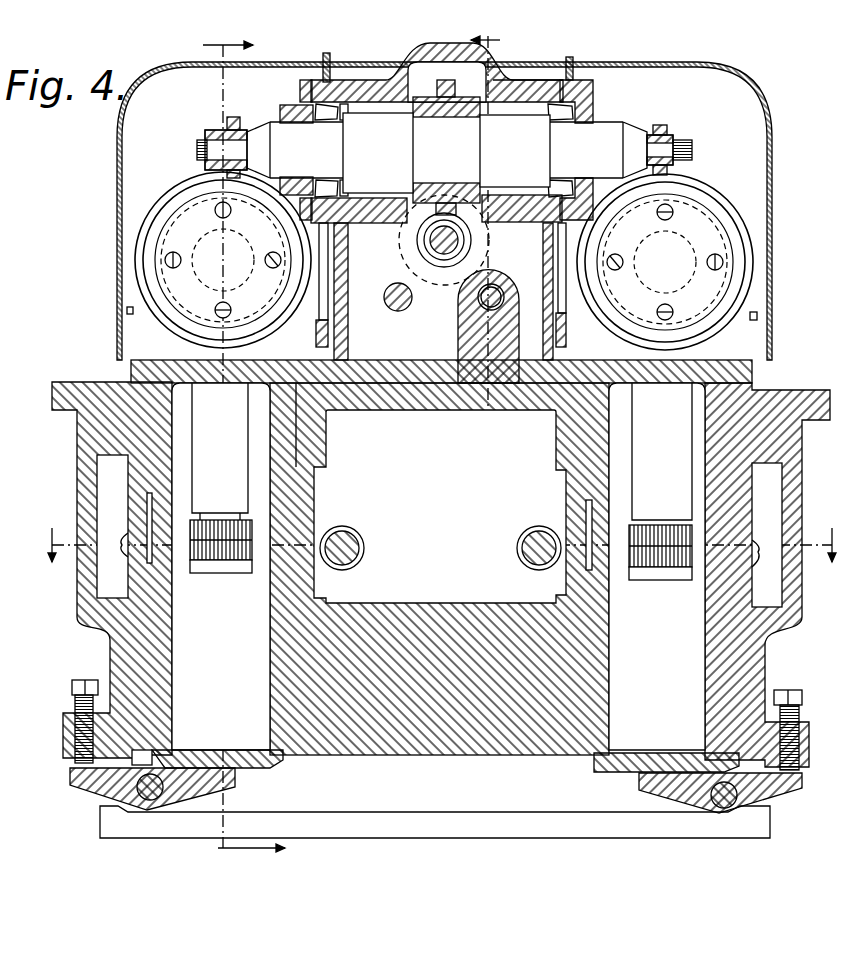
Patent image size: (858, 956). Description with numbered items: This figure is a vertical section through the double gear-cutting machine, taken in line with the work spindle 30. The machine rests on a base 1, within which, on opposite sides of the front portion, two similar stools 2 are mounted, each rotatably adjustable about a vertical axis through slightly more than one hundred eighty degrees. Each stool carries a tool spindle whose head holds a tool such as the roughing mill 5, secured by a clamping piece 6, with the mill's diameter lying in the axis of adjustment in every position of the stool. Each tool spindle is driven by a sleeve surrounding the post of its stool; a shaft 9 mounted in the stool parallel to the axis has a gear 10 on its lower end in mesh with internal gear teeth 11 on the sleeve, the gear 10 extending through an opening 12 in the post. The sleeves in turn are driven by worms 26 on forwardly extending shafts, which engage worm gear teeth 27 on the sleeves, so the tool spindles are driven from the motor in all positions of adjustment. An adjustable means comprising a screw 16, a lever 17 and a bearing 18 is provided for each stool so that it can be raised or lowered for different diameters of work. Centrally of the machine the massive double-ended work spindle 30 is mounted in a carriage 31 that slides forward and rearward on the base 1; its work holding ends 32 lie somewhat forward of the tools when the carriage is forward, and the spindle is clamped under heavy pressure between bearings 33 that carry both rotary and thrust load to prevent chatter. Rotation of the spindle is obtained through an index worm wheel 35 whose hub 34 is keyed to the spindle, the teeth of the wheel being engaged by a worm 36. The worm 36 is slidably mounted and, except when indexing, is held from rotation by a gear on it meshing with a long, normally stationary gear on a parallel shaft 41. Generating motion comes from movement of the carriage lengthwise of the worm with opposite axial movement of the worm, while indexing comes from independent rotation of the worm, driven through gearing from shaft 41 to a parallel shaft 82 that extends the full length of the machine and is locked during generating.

The base 1 is at (77, 462).
The stool 2 is at (117, 340).
The roughing mill 5 is at (163, 197).
The clamping piece 6 is at (438, 564).
The shaft 9 is at (483, 315).
The gear 10 is at (237, 513).
The internal gear teeth 11 is at (148, 505).
The opening 12 is at (208, 567).
The screw 16 is at (75, 707).
The lever 17 is at (100, 780).
The bearing 18 is at (286, 780).
The worm 26 is at (349, 533).
The worm gear teeth 27 is at (318, 537).
The work spindle 30 is at (447, 153).
The carriage 31 is at (388, 80).
The work holding ends 32 is at (222, 137).
The bearings 33 is at (305, 104).
The hub 34 is at (440, 96).
The index worm wheel 35 is at (479, 83).
The worm 36 is at (432, 246).
The shaft 41 is at (493, 284).
The shaft 82 is at (398, 312).